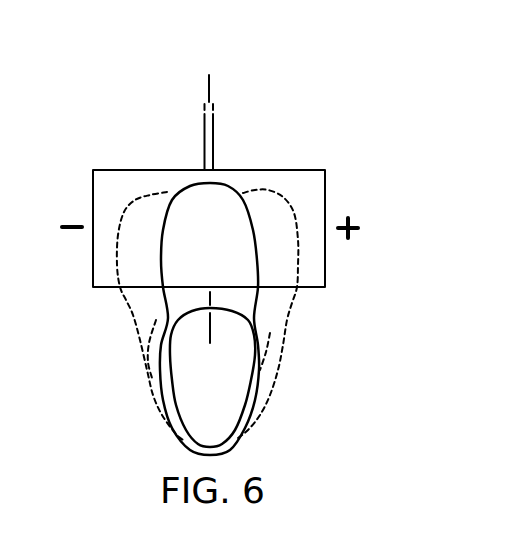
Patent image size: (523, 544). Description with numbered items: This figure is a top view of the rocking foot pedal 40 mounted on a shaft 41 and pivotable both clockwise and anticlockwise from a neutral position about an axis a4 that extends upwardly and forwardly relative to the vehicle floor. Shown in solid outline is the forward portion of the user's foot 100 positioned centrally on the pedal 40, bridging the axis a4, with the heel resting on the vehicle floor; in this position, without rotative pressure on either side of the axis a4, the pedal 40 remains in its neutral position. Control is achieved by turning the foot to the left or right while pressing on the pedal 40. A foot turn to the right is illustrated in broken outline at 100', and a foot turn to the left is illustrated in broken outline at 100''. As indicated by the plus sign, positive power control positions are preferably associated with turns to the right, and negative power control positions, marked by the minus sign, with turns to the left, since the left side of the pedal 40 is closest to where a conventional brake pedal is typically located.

The rocking foot pedal 40 is at (135, 170).
The shaft 41 is at (213, 141).
The user's foot 100 is at (198, 292).
The foot turn to the right 100' is at (301, 291).
The foot turn to the left 100'' is at (105, 302).
The axis a4 is at (209, 89).